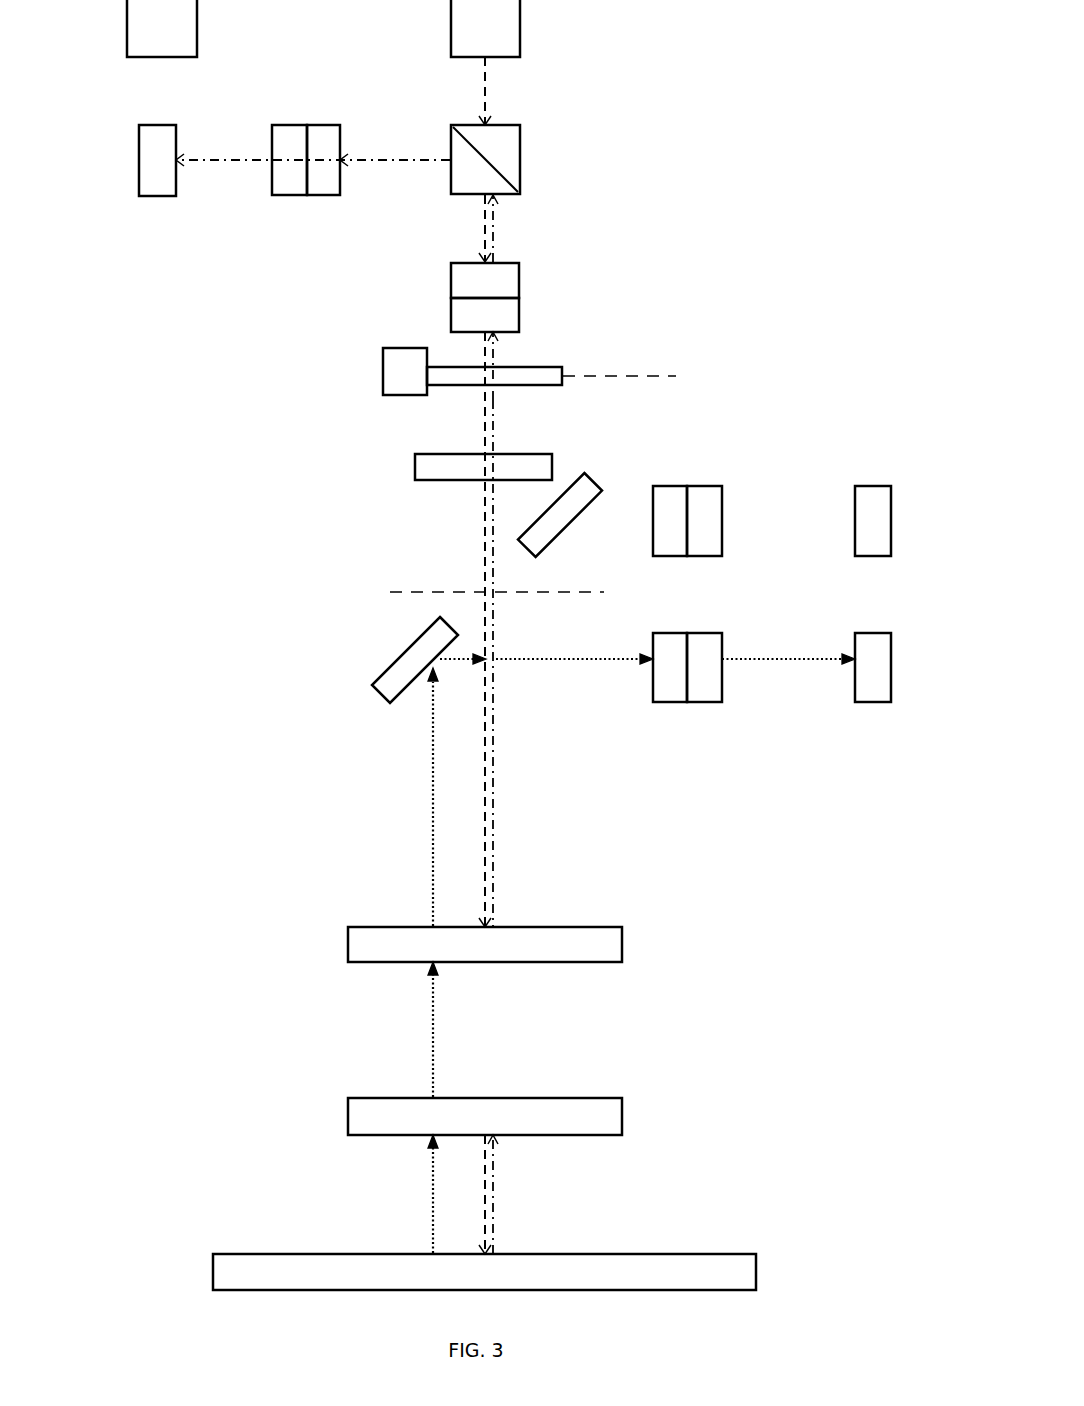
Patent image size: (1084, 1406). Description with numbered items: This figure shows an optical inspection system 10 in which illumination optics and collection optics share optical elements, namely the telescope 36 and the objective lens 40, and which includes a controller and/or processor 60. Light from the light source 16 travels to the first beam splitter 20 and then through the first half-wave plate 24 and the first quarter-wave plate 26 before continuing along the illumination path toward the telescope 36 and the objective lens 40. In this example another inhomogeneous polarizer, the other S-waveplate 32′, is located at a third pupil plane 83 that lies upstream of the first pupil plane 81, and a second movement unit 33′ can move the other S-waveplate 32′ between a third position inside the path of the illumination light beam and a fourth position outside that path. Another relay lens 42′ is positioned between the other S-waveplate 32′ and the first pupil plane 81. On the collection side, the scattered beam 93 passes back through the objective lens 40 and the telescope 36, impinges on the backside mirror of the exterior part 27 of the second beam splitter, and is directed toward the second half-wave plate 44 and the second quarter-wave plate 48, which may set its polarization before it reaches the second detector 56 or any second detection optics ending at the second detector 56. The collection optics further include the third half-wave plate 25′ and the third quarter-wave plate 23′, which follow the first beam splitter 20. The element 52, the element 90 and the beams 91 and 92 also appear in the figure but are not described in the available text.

The lithographic system 10 is at (158, 1186).
The light source 16 is at (474, 31).
The first beam splitter 20 is at (522, 158).
The third quarter-wave plate 23′ is at (288, 197).
The first half-wave plate 24 is at (522, 282).
The third half-wave plate 25′ is at (328, 197).
The first quarter-wave plate 26 is at (522, 313).
The exterior part of second beam splitter 27 is at (592, 472).
The other S-waveplate 32′ is at (542, 366).
The second movement unit 33′ is at (391, 383).
The telescope 36 is at (622, 944).
The objective lens 40 is at (622, 1110).
The other relay lens 42′ is at (469, 478).
The second half-wave plate 44 is at (672, 486).
The second quarter-wave plate 48 is at (712, 486).
The detector 52 is at (138, 160).
The second detector 56 is at (867, 486).
The controller and/or processor 60 is at (149, 31).
The first pupil plane 81 is at (478, 592).
The third pupil plane 83 is at (634, 375).
The substrate 90 is at (757, 1263).
The radiation beam 91 is at (489, 90).
The reflected beam 92 is at (397, 157).
The scattered beam 93 is at (780, 663).